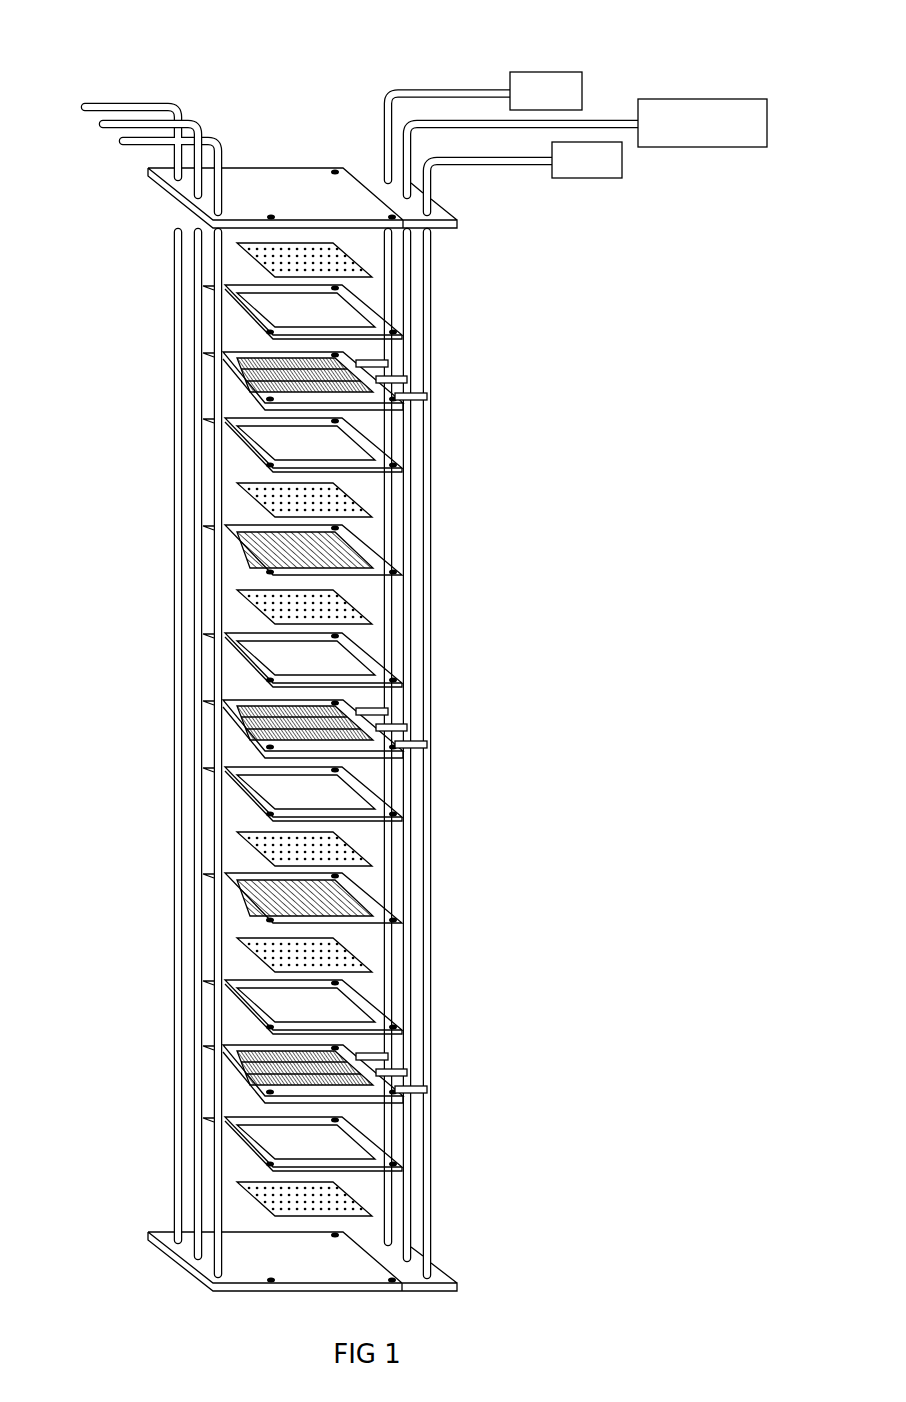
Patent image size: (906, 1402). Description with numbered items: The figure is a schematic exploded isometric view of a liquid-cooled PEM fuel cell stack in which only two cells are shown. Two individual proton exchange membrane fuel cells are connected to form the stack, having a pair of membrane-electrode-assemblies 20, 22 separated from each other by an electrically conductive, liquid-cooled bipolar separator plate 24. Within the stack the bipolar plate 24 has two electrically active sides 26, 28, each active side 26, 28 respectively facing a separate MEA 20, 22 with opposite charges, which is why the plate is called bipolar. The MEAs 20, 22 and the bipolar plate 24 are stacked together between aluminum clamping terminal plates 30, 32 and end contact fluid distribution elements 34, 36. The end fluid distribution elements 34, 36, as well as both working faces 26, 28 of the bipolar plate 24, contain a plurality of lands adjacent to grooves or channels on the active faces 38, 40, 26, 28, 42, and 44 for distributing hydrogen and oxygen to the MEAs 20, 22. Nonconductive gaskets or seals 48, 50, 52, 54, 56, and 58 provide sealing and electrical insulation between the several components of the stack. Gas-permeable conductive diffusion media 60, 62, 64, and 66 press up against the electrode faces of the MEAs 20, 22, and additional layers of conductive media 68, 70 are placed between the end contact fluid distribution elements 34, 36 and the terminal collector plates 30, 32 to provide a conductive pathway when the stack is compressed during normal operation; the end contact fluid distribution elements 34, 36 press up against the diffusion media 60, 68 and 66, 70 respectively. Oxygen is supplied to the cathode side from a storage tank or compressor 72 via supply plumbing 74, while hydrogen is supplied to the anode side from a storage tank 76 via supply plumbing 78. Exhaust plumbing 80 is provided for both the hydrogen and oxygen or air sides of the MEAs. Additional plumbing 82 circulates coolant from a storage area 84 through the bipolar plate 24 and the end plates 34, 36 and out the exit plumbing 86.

The membrane-electrode-assembly 20 is at (225, 552).
The membrane-electrode-assembly 22 is at (376, 889).
The bipolar separator plate 24 is at (263, 762).
The electrically active side 26 is at (263, 761).
The electrically active side 28 is at (250, 757).
The clamping terminal plate 30 is at (327, 207).
The clamping terminal plate 32 is at (343, 1273).
The end contact fluid distribution element 34 is at (299, 361).
The end contact fluid distribution element 36 is at (311, 1109).
The active face 38 is at (340, 370).
The active face 40 is at (372, 430).
The active face 42 is at (370, 1073).
The active face 44 is at (250, 1105).
The gasket 48 is at (314, 437).
The gasket 50 is at (240, 662).
The gasket 52 is at (380, 797).
The gasket 54 is at (240, 1010).
The gasket 56 is at (370, 1133).
The gasket 58 is at (242, 316).
The diffusion media 60 is at (250, 495).
The diffusion media 62 is at (250, 602).
The diffusion media 64 is at (250, 845).
The diffusion media 66 is at (250, 948).
The conductive media 68 is at (248, 255).
The conductive media 70 is at (250, 1197).
The storage tank or compressor 72 is at (570, 78).
The supply plumbing 74 is at (385, 105).
The storage tank 76 is at (615, 178).
The supply plumbing 78 is at (430, 183).
The exhaust plumbing 80 is at (142, 105).
The coolant plumbing 82 is at (602, 122).
The coolant storage area 84 is at (682, 107).
The exit plumbing 86 is at (183, 120).